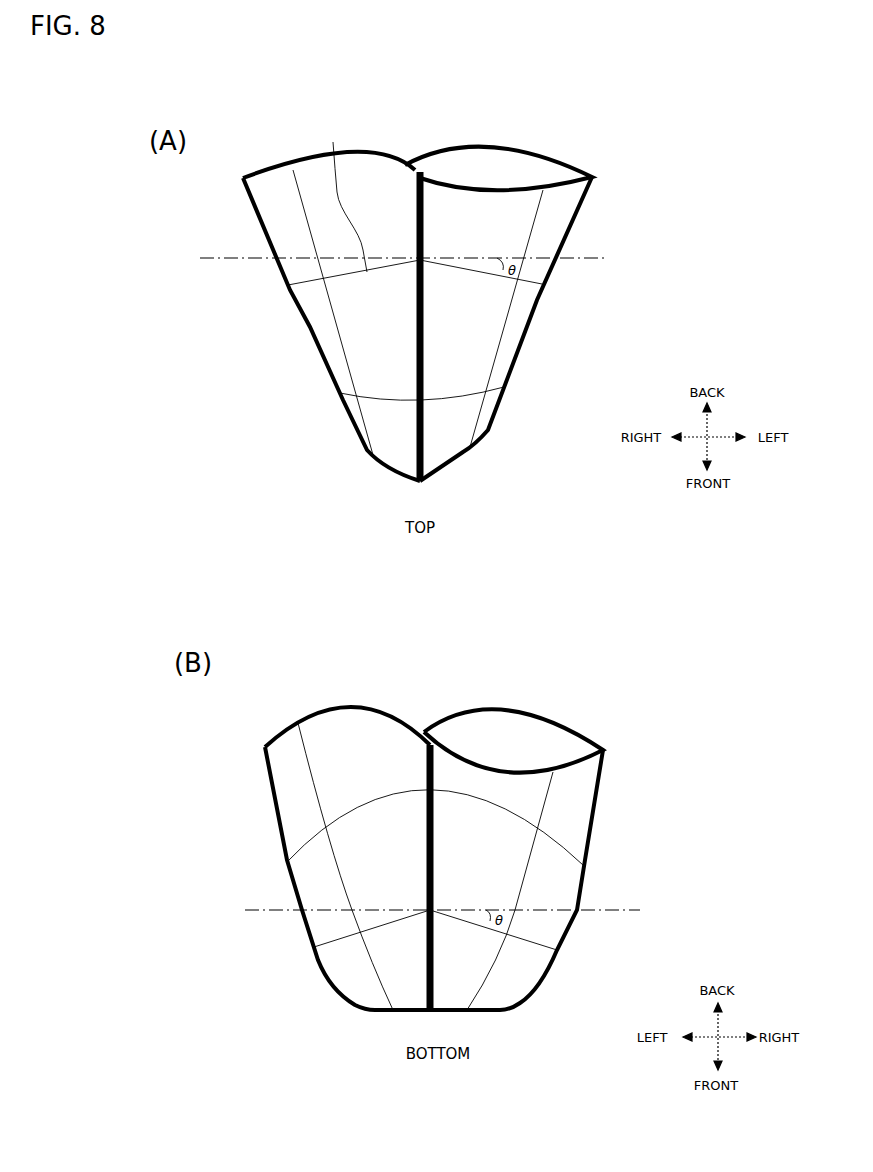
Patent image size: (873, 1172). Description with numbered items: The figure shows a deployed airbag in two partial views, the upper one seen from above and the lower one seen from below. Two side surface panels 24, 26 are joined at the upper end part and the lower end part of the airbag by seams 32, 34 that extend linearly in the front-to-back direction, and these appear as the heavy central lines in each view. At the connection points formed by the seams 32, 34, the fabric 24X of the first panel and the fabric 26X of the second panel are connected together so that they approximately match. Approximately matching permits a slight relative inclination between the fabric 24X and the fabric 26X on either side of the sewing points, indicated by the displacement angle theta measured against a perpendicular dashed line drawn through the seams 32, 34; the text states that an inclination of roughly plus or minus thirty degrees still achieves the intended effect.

The side surface panel 24 is at (563, 228).
The side surface panel 26 is at (323, 327).
The fabric of first panel 24X is at (528, 282).
The fabric of second panel 26X is at (605, 942).
The seam 32 is at (418, 451).
The seam 34 is at (450, 757).